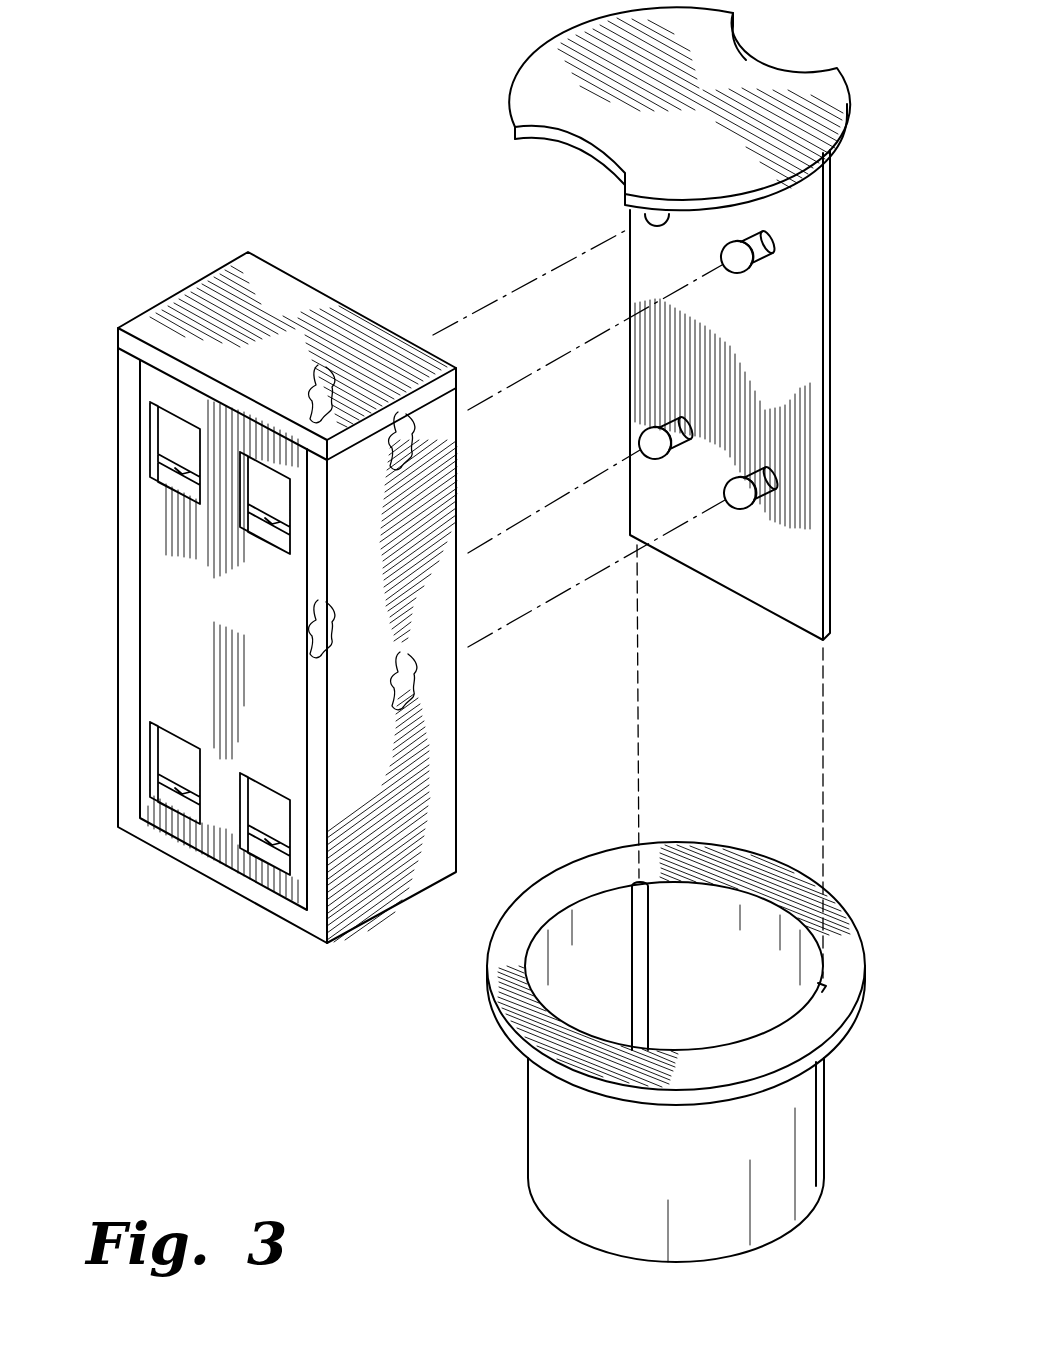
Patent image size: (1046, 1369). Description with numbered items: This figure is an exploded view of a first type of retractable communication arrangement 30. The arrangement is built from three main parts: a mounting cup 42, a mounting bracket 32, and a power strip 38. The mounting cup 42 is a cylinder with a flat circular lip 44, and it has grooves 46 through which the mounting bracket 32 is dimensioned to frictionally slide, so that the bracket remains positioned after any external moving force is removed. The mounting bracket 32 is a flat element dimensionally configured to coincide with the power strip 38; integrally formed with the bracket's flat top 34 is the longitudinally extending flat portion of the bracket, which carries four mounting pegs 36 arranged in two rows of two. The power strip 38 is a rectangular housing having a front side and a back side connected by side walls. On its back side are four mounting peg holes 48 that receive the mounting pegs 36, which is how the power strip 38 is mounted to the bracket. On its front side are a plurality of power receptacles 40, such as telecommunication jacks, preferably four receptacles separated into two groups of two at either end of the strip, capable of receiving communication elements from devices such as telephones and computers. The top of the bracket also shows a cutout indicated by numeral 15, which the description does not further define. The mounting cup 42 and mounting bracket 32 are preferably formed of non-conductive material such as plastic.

The retractable communication arrangement 30 is at (158, 227).
The power strip 38 is at (118, 550).
The power receptacles 40 is at (152, 418).
The mounting peg holes 48 is at (410, 427).
The mounting bracket 32 is at (832, 380).
The mounting pegs 36 is at (773, 225).
The flat top 34 is at (840, 93).
The cable notch 15 is at (753, 63).
The mounting cup 42 is at (562, 1153).
The flat circular lip 44 is at (508, 977).
The grooves 46 is at (638, 880).